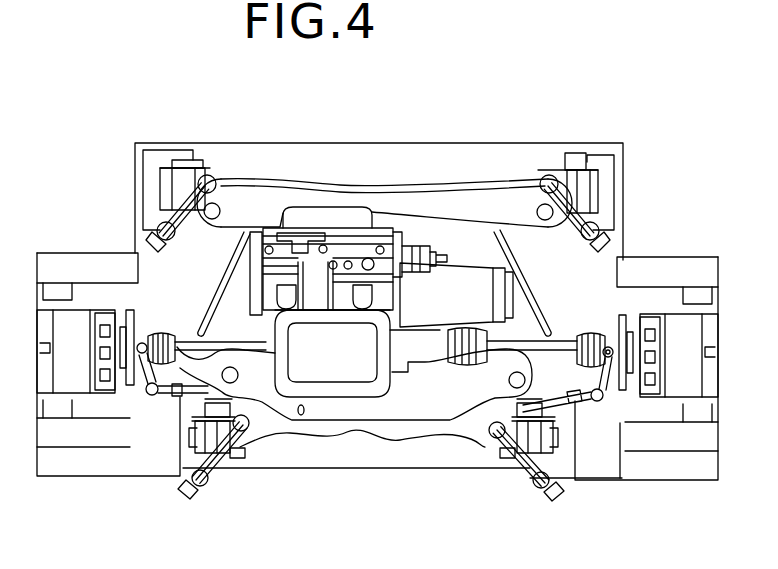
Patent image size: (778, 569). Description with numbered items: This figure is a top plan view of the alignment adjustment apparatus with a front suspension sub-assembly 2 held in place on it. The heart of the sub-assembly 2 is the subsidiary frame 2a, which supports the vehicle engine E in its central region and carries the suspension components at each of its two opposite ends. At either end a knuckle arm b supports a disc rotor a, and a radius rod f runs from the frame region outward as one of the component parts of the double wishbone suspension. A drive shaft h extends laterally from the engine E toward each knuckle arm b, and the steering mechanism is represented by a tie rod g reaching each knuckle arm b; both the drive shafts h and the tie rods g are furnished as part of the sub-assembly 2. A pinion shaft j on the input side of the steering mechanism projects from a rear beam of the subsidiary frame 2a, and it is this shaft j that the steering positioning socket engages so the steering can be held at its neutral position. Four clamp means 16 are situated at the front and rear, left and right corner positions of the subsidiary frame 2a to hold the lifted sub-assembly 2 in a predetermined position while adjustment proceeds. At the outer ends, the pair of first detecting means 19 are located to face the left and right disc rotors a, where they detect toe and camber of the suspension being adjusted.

The clamp means 16 is at (157, 187).
The first detecting means 19 is at (78, 400).
The front suspension sub-assembly 2 is at (389, 394).
The subsidiary frame 2a is at (382, 433).
The vehicle engine E is at (348, 250).
The disc rotor a is at (124, 328).
The knuckle arm b is at (144, 344).
The radius rod f is at (220, 293).
The tie rod g is at (192, 393).
The drive shaft h is at (200, 346).
The pinion shaft j is at (302, 418).